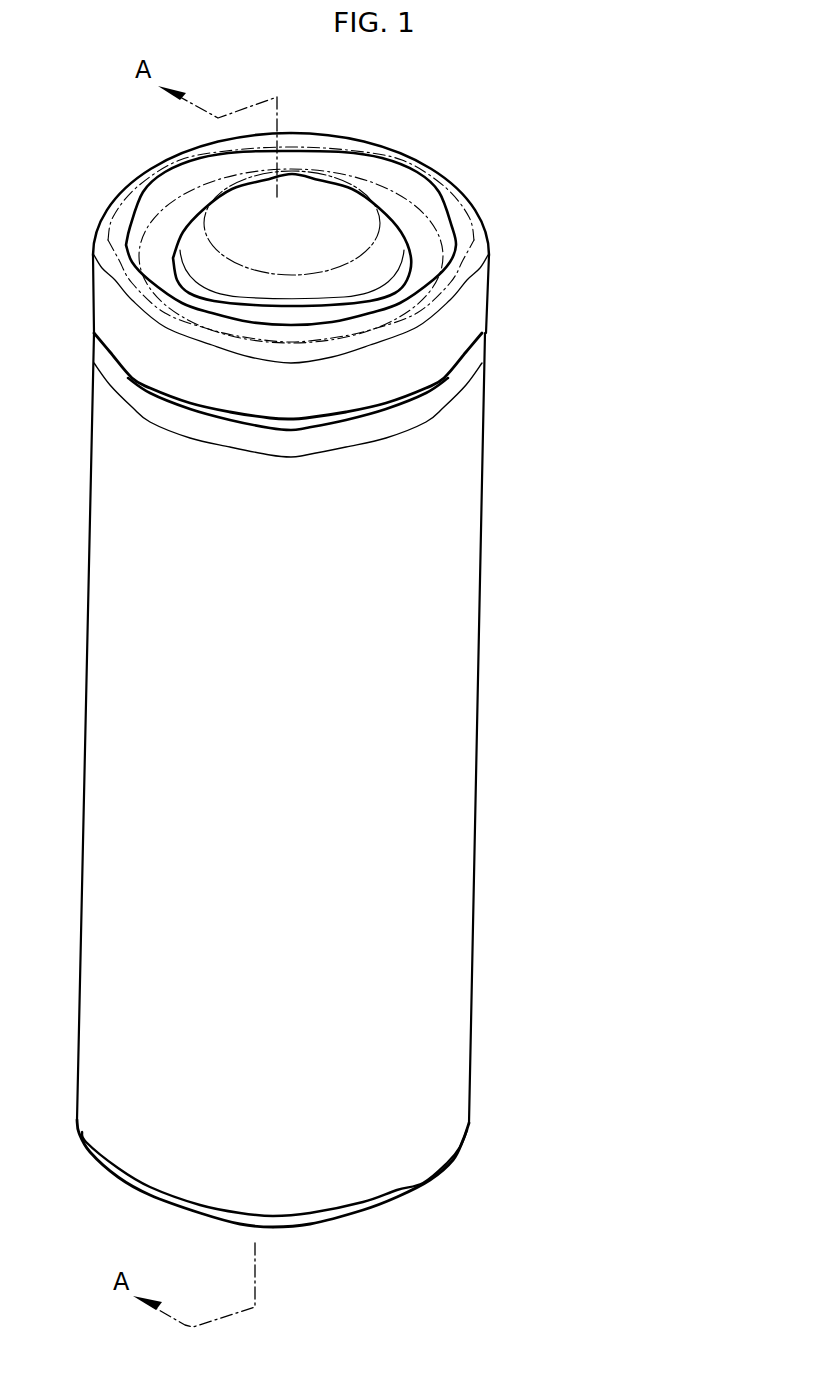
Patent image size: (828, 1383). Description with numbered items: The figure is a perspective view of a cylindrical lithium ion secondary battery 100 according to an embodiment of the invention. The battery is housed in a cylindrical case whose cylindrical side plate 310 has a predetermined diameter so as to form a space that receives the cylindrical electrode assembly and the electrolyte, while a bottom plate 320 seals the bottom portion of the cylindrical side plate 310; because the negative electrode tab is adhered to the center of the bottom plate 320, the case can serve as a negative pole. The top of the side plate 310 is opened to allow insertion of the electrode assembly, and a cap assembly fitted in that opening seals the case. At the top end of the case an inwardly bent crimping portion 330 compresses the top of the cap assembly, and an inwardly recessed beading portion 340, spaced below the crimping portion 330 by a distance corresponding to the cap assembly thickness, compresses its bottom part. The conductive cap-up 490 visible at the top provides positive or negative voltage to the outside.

The cylindrical lithium ion secondary battery 100 is at (575, 279).
The cylindrical side plate 310 is at (430, 835).
The bottom plate 320 is at (407, 1192).
The crimping portion 330 is at (468, 213).
The beading portion 340 is at (438, 400).
The cap-up 490 is at (317, 203).